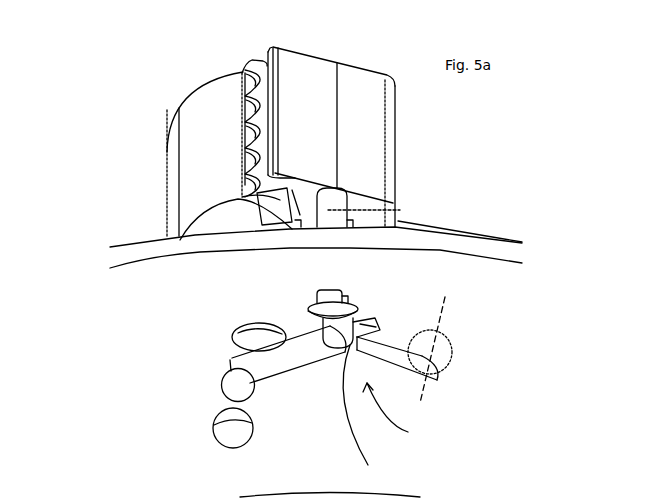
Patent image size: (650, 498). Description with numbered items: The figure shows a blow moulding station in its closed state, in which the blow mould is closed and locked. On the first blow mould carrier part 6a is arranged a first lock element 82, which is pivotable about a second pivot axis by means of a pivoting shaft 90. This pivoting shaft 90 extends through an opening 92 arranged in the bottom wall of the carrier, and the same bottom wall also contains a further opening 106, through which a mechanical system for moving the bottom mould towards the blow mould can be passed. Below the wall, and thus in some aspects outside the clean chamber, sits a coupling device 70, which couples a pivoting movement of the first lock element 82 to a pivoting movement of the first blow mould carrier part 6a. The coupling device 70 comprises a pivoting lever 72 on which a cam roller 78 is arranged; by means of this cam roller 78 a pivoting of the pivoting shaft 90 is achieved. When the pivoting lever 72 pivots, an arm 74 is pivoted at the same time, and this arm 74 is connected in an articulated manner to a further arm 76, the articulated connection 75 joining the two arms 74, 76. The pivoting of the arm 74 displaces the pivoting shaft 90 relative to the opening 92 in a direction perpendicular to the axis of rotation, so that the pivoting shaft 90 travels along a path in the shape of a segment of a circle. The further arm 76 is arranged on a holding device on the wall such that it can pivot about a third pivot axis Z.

The first lock element 82 is at (302, 73).
The first blow mould carrier part 6a is at (200, 165).
The pivoting shaft 90 is at (400, 210).
The opening 92 is at (345, 305).
The arm 74 is at (375, 322).
The further arm 76 is at (393, 358).
The cam roller 78 is at (233, 392).
The pivoting lever 72 is at (298, 355).
The coupling device 70 is at (396, 413).
The articulated connection 75 is at (367, 414).
The opening 106 is at (218, 440).
The third pivot axis Z is at (440, 380).